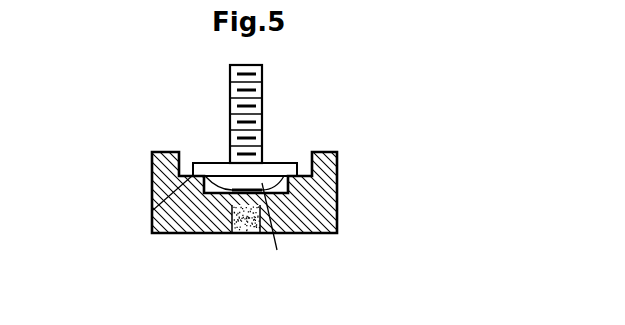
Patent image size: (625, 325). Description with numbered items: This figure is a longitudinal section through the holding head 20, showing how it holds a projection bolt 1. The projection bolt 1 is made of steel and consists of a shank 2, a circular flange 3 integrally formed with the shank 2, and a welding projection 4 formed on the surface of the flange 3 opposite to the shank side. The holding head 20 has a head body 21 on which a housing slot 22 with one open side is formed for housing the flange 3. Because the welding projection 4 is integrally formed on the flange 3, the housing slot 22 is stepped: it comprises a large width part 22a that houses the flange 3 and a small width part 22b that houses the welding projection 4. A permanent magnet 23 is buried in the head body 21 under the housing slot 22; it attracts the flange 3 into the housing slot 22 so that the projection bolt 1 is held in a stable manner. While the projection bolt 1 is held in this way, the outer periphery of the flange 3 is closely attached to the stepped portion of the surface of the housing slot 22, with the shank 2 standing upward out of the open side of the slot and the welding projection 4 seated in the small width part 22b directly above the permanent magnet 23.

The projection bolt 1 is at (233, 172).
The shank 2 is at (263, 80).
The circular flange 3 is at (283, 162).
The welding projection 4 is at (276, 232).
The holding head 20 is at (252, 196).
The head body 21 is at (337, 220).
The housing slot 22 is at (309, 152).
The large width part 22a is at (186, 152).
The small width part 22b is at (158, 208).
The permanent magnet 23 is at (237, 234).